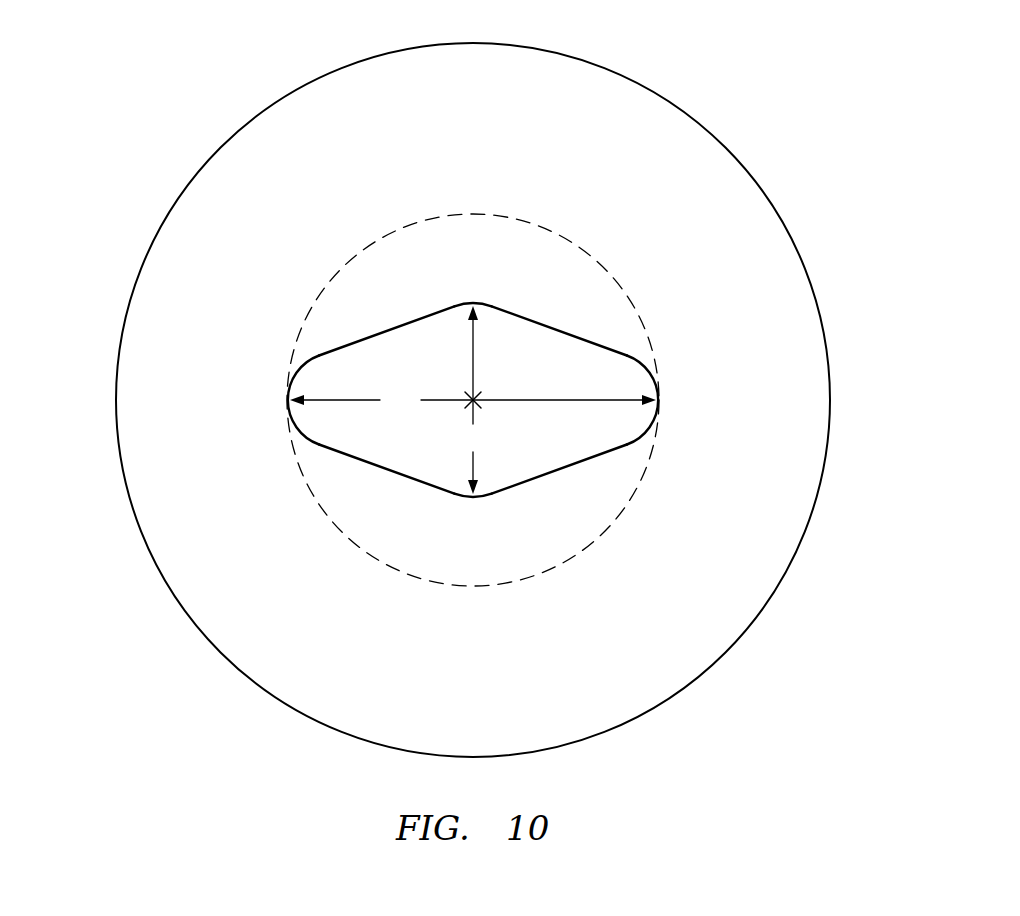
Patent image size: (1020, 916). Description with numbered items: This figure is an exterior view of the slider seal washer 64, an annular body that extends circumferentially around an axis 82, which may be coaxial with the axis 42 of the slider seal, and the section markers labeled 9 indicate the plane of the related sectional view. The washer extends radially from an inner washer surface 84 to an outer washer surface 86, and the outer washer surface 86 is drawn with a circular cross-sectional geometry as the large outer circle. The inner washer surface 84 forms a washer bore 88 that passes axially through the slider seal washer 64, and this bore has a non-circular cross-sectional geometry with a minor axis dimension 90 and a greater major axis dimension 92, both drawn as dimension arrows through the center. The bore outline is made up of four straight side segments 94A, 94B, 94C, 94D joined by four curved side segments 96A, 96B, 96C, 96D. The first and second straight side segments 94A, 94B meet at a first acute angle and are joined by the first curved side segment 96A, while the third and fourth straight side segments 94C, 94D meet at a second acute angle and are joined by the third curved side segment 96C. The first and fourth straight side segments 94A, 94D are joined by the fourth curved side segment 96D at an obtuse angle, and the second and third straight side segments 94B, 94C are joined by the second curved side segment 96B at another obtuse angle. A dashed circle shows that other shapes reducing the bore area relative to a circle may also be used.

The section line of FIG. 9 is at (102, 400).
The axis of the slider seal 42 is at (480, 403).
The slider seal washer 64 is at (724, 86).
The axis 82 is at (517, 458).
The inner washer surface 84 is at (389, 339).
The outer washer surface 86 is at (287, 93).
The washer bore 88 is at (560, 383).
The minor axis dimension 90 is at (473, 400).
The major axis dimension 92 is at (473, 400).
The first straight side segment 94A is at (410, 478).
The second straight side segment 94B is at (389, 338).
The third straight side segment 94C is at (603, 352).
The fourth straight side segment 94D is at (583, 455).
The first curved side segment 96A is at (288, 418).
The second curved side segment 96B is at (471, 303).
The third curved side segment 96C is at (658, 381).
The fourth curved side segment 96D is at (486, 497).